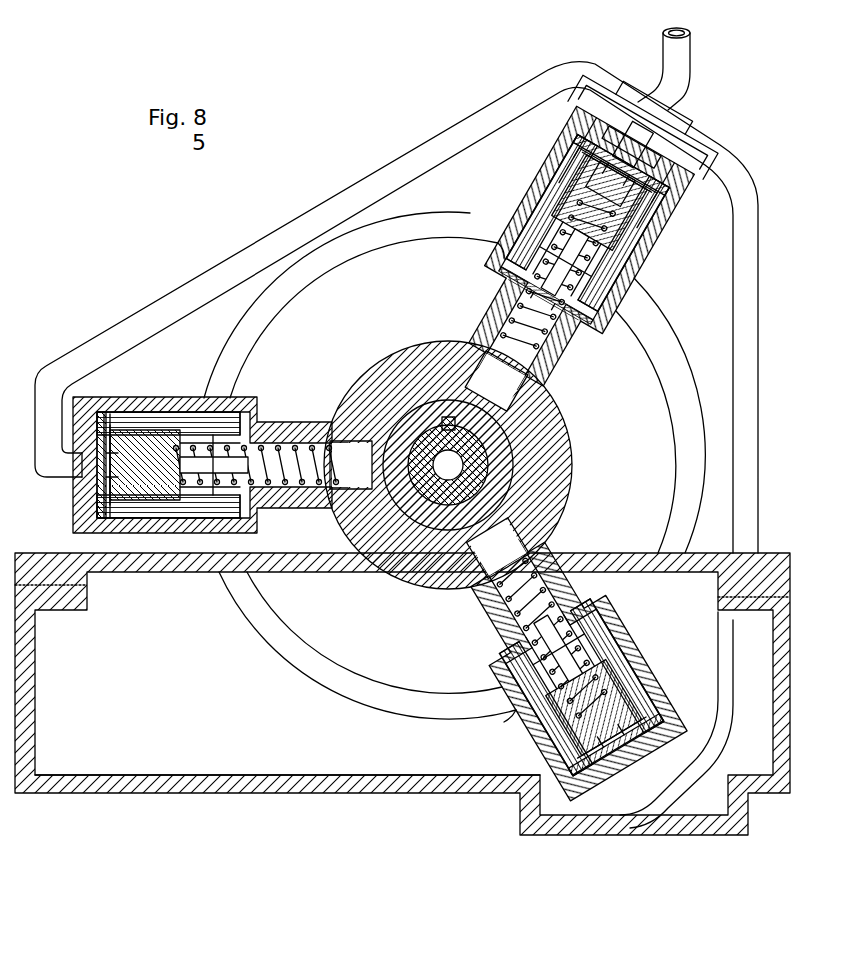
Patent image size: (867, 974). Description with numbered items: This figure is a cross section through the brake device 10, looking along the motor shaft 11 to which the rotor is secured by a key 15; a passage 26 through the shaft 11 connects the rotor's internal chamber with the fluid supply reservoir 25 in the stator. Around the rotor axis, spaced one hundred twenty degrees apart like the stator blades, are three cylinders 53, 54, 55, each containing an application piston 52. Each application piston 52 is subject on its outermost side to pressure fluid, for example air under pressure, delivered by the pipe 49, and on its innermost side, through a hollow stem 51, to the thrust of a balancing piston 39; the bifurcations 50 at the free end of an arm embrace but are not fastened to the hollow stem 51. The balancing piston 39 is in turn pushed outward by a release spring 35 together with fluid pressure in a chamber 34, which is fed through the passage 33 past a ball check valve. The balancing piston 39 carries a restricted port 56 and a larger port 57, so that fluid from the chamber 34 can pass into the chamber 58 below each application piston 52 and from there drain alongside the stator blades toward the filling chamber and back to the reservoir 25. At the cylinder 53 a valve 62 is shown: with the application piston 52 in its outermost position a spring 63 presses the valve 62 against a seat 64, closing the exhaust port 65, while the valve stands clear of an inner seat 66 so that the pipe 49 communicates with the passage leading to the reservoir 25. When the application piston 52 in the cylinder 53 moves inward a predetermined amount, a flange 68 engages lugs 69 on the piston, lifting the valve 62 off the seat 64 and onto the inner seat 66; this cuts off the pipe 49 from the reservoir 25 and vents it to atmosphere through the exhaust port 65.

The brake device 10 is at (415, 805).
The shaft 11 is at (470, 470).
The key 15 is at (447, 418).
The fluid supply reservoir 25 is at (212, 786).
The passage 26 is at (447, 472).
The passage 33 is at (343, 490).
The chamber 34 is at (335, 500).
The release spring 35 is at (312, 425).
The balancing piston 39 is at (268, 412).
The pipe 49 is at (374, 186).
The bifurcations 50 is at (650, 244).
The hollow stem 51 is at (640, 236).
The application piston 52 is at (114, 412).
The cylinder 53 is at (560, 176).
The cylinder 54 is at (525, 702).
The cylinder 55 is at (172, 405).
The restricted port 56 is at (550, 232).
The larger port 57 is at (510, 262).
The chamber 58 is at (218, 392).
The valve 62 is at (662, 142).
The spring 63 is at (742, 212).
The seat 64 is at (688, 112).
The exhaust port 65 is at (646, 132).
The inner seat 66 is at (672, 160).
The flange 68 is at (570, 196).
The lugs 69 is at (656, 222).